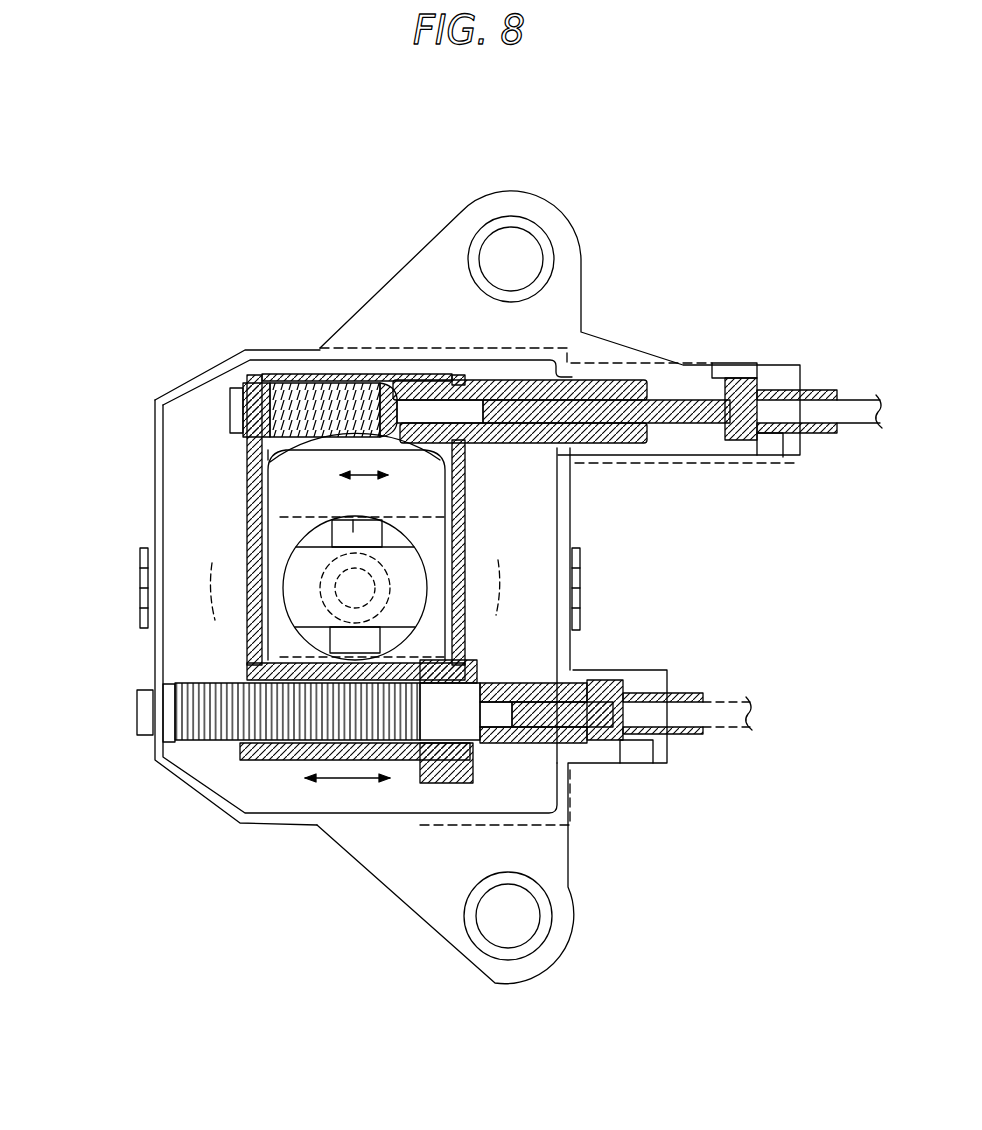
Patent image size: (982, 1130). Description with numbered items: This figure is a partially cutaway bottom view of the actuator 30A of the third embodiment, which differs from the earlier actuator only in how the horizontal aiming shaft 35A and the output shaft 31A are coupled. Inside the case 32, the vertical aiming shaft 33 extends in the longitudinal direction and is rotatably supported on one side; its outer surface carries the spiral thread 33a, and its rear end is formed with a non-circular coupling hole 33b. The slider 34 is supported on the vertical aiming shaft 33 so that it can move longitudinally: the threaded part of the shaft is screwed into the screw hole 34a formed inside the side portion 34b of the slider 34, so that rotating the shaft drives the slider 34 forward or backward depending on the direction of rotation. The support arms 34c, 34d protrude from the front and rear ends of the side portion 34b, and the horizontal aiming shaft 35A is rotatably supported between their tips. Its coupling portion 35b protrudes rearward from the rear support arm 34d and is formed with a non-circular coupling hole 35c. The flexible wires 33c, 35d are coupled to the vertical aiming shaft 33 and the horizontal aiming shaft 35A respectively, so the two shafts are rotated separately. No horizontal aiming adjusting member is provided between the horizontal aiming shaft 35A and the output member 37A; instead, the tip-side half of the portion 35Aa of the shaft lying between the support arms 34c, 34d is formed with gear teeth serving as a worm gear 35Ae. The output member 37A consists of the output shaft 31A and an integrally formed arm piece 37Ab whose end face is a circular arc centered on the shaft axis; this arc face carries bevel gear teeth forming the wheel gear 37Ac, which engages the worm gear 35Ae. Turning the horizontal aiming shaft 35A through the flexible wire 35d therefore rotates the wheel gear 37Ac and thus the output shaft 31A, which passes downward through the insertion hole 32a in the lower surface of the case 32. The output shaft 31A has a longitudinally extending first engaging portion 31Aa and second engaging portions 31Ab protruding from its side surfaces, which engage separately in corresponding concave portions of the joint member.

The actuator 30A is at (421, 550).
The case 32 is at (419, 621).
The insertion hole 32a is at (150, 632).
The vertical aiming shaft 33 is at (415, 793).
The spiral thread 33a is at (187, 750).
The coupling hole 33b is at (677, 717).
The flexible wire 33c is at (727, 697).
The slider 34 is at (367, 671).
The screw hole 34a is at (263, 757).
The side portion 34b is at (460, 723).
The support arm 34c is at (243, 513).
The support arm 34d is at (453, 480).
The horizontal aiming shaft 35A is at (498, 331).
The portion of horizontal aiming shaft 35Aa is at (337, 383).
The worm gear 35Ae is at (290, 385).
The coupling portion 35b is at (613, 385).
The coupling hole 35c is at (663, 393).
The flexible wire 35d is at (860, 397).
The output member 37A is at (379, 540).
The arm piece 37Ab is at (430, 483).
The wheel gear 37Ac is at (285, 455).
The output shaft 31A is at (242, 690).
The first engaging portion 31Aa is at (355, 642).
The second engaging portion 31Ab is at (353, 520).